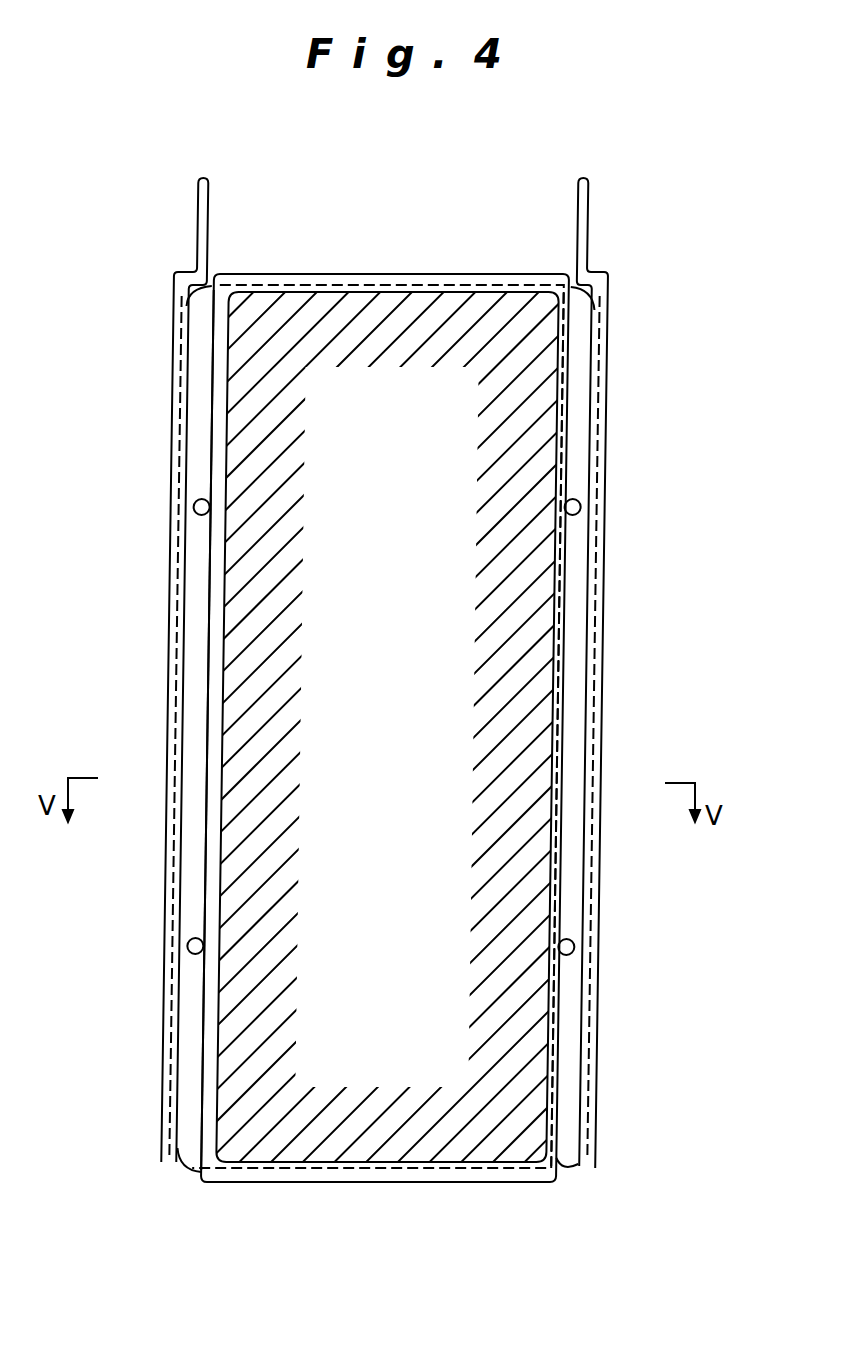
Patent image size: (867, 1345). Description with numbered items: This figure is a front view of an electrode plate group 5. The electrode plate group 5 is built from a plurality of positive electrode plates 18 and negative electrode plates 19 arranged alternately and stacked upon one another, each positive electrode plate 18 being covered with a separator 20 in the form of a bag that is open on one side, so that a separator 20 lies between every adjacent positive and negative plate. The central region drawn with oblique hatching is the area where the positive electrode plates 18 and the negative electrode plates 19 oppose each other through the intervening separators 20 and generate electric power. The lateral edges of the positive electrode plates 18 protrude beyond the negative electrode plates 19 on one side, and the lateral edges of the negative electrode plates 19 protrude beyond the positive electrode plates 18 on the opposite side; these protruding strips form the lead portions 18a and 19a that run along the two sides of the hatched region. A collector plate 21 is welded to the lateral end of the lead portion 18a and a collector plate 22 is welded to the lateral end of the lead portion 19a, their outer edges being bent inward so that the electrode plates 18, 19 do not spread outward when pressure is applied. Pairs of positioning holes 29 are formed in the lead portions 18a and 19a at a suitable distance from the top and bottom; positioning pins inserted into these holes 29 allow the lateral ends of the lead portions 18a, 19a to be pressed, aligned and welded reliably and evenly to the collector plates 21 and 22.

The electrode plate group 5 is at (636, 275).
The positive electrode plate 18 is at (344, 286).
The lead portion 18a is at (197, 715).
The negative electrode plate 19 is at (464, 288).
The lead portion 19a is at (578, 720).
The separator 20 is at (226, 634).
The collector plate 21 is at (172, 862).
The collector plate 22 is at (602, 846).
The positioning hole 29 is at (197, 507).